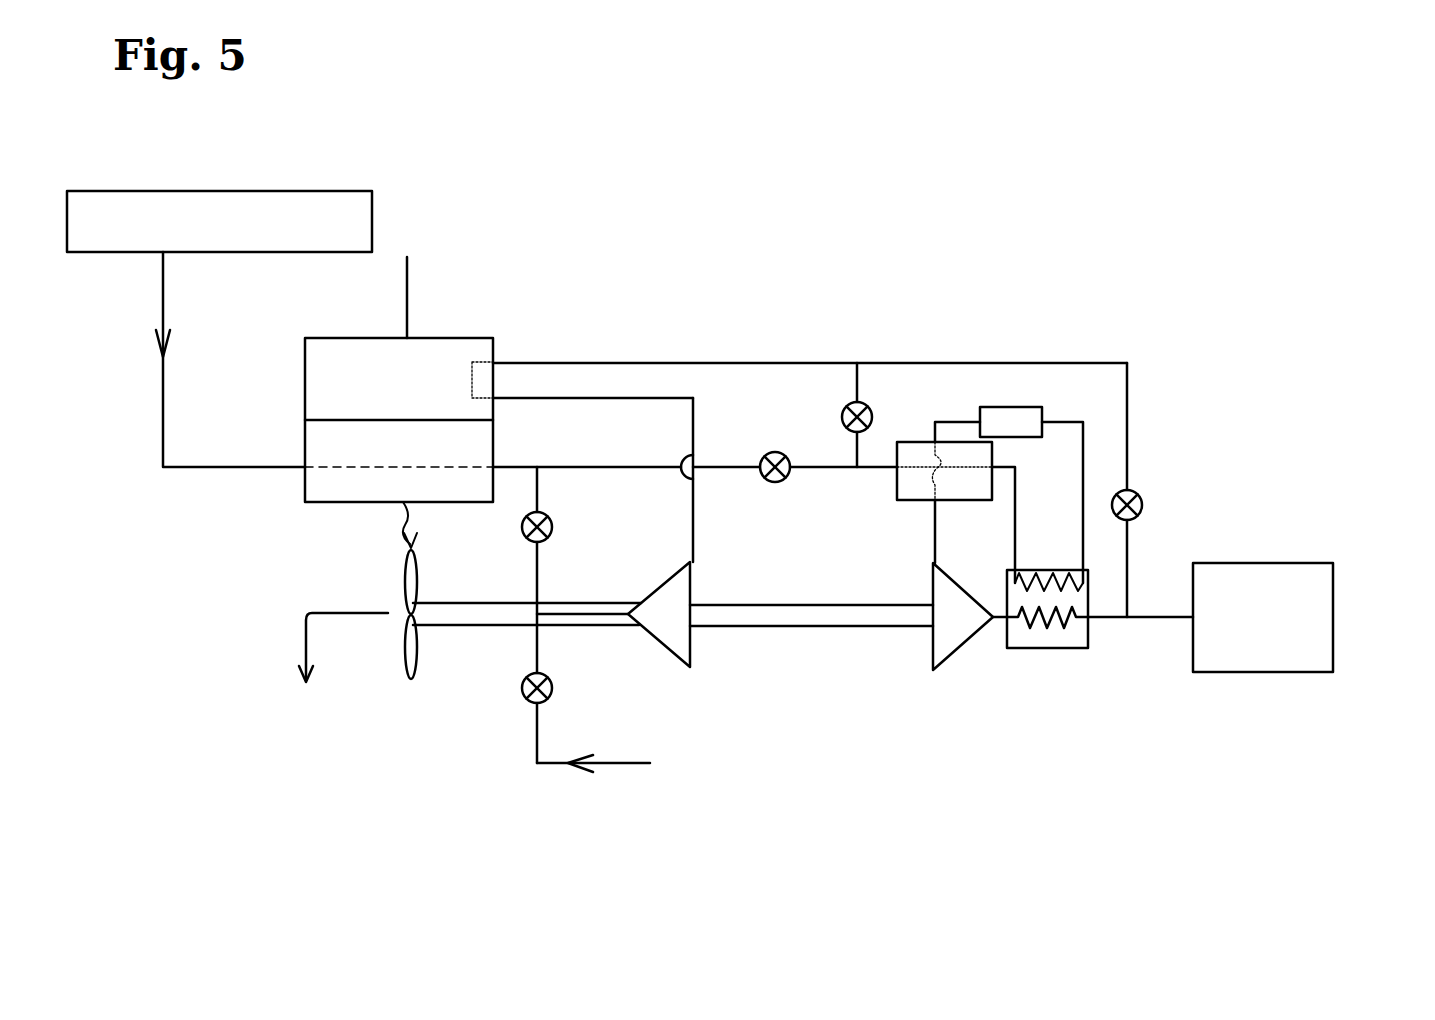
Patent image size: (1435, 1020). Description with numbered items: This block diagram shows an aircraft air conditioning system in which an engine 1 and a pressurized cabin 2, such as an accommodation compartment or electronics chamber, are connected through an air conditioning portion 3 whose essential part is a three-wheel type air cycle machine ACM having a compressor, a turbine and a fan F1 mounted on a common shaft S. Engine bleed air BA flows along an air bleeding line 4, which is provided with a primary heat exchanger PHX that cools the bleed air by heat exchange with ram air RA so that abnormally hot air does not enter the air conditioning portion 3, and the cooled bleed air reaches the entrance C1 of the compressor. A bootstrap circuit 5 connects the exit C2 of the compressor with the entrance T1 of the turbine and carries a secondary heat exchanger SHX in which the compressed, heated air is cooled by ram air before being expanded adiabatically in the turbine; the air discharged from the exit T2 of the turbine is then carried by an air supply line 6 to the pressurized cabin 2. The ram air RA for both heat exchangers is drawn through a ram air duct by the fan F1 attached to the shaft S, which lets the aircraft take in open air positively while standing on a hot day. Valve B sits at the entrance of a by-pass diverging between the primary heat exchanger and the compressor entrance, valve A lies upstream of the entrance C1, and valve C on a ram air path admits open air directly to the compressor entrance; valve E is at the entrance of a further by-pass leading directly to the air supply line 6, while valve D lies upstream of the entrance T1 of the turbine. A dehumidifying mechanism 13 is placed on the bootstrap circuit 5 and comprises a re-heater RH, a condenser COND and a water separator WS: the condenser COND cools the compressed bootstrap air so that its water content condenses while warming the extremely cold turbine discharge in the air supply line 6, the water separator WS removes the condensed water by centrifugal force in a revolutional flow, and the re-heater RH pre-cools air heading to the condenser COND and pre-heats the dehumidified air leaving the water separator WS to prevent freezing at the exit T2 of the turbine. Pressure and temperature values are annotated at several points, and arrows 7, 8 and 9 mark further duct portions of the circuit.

The engine 1 is at (322, 192).
The pressurized cabin 2 is at (1282, 563).
The air conditioning portion 3 is at (880, 672).
The air bleeding line 4 is at (203, 478).
The bootstrap circuit 5 is at (741, 348).
The air supply line 6 is at (1136, 600).
The primary heat exchanger outlet duct 7 is at (810, 455).
The cold air inlet duct 8 is at (580, 788).
The bypass branch duct with valve E 9 is at (1108, 344).
The dehumidifying mechanism 13 is at (1097, 435).
The engine bleed air BA is at (152, 342).
The secondary heat exchanger SHX is at (305, 367).
The primary heat exchanger PHX is at (305, 440).
The ram air RA is at (403, 533).
The fan F1 is at (405, 657).
The shaft S is at (448, 625).
The entrance of the compressor C1 is at (605, 625).
The exit of the compressor C2 is at (690, 562).
The entrance of the turbine T1 is at (933, 563).
The exit of the turbine T2 is at (993, 618).
The valve A is at (549, 570).
The valve B is at (775, 485).
The valve C is at (548, 688).
The valve D is at (868, 415).
The valve E is at (1137, 506).
The re-heater RH is at (897, 493).
The water separator WS is at (998, 407).
The condenser COND is at (1070, 650).
The air cycle machine ACM is at (750, 645).